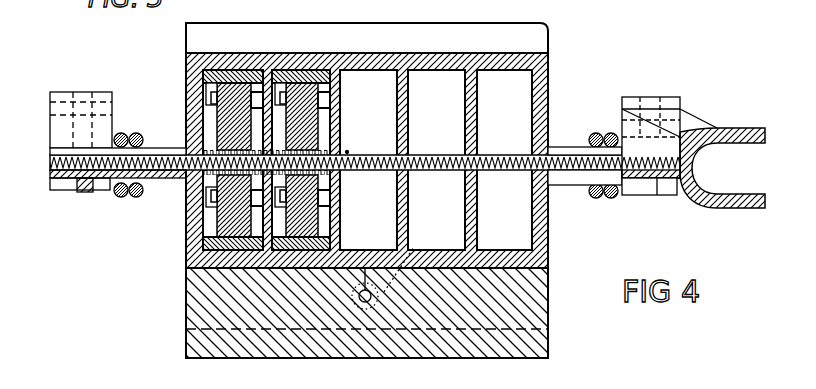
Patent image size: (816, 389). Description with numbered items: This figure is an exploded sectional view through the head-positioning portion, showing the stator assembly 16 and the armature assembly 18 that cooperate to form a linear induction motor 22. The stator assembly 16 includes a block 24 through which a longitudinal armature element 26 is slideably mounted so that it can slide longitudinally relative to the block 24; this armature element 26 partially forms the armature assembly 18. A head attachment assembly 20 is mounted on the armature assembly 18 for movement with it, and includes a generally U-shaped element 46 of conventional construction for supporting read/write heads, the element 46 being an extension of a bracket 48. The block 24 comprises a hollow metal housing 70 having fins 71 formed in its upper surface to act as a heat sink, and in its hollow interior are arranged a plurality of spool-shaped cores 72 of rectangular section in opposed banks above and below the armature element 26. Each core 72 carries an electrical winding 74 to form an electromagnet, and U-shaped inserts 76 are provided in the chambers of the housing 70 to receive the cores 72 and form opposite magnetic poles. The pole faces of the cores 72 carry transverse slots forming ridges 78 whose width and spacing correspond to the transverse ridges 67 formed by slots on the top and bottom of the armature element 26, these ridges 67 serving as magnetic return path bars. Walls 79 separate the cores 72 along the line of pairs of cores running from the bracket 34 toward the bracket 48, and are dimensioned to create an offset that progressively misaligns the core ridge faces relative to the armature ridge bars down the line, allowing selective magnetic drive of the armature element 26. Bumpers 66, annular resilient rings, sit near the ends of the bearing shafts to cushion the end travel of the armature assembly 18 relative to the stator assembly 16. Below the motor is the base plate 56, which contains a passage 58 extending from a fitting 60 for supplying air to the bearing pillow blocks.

The stator assembly 16 is at (158, 218).
The armature assembly 18 is at (155, 130).
The head attachment assembly 20 is at (706, 116).
The linear induction motor 22 is at (346, 145).
The block 24 is at (549, 258).
The longitudinal armature element 26 is at (157, 172).
The bracket 34 is at (62, 88).
The U-shaped element 46 is at (762, 104).
The bracket 48 is at (652, 184).
The base plate 56 is at (187, 302).
The passage 58 is at (365, 268).
The fitting 60 is at (416, 248).
The bumpers 66 is at (138, 98).
The transverse ridges 67 is at (118, 167).
The hollow metal housing 70 is at (555, 85).
The fins 71 is at (540, 40).
The spool-shaped cores 72 is at (222, 89).
The electrical winding 74 is at (255, 102).
The U-shaped inserts 76 is at (317, 40).
The ridges 78 is at (348, 152).
The walls 79 is at (246, 56).